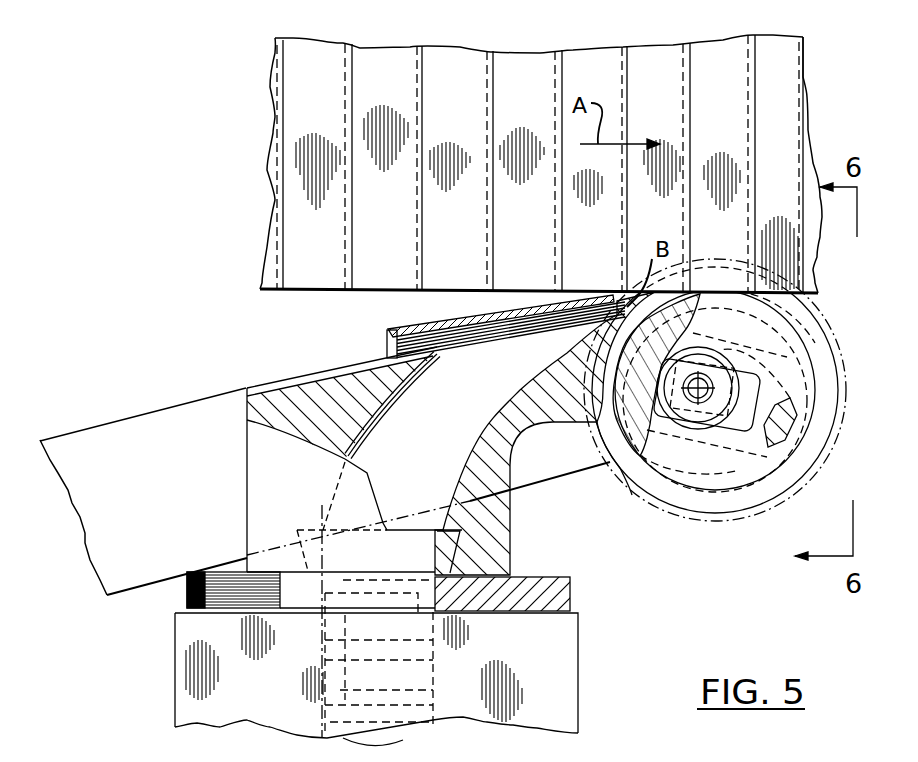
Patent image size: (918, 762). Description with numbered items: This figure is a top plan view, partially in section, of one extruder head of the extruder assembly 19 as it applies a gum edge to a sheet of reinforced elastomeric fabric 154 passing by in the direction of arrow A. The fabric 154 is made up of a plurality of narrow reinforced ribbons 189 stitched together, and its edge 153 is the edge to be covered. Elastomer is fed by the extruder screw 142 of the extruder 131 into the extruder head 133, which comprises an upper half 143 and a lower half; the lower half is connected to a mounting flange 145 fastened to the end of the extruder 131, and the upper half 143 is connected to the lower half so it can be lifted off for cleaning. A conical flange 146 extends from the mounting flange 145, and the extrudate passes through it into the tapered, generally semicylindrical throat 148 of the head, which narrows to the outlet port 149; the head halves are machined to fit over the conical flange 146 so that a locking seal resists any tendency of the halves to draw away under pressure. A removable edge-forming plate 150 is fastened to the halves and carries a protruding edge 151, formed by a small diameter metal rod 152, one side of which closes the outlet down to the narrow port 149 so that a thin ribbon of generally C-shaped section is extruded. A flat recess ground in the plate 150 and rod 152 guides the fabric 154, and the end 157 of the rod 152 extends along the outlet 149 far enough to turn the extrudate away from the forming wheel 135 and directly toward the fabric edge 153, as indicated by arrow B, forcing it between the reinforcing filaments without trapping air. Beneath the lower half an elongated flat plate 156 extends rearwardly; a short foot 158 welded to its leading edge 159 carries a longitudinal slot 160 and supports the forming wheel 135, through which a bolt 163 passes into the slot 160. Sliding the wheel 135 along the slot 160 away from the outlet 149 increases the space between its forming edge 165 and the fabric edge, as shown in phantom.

The extruder assembly 19 is at (190, 372).
The extruder 131 is at (563, 712).
The extruder head 133 is at (247, 482).
The forming wheel 135 is at (700, 493).
The extruder screw 142 is at (433, 640).
The upper half 143 is at (500, 548).
The mounting flange 145 is at (555, 593).
The conical flange 146 is at (447, 540).
The tapered semicylindrical throat 148 is at (380, 437).
The outlet port 149 is at (610, 317).
The edge-forming plate 150 is at (413, 326).
The protruding edge 151 is at (497, 337).
The metal rod 152 is at (387, 345).
The fabric edge 153 is at (307, 292).
The reinforced elastomeric fabric 154 is at (300, 236).
The elongated flat plate 156 is at (153, 422).
The end of rod 157 is at (582, 300).
The foot 158 is at (742, 447).
The leading edge 159 is at (635, 452).
The slot 160 is at (750, 407).
The bolt 163 is at (690, 427).
The forming edge 165 is at (790, 427).
The narrow reinforced ribbons 189 is at (640, 65).